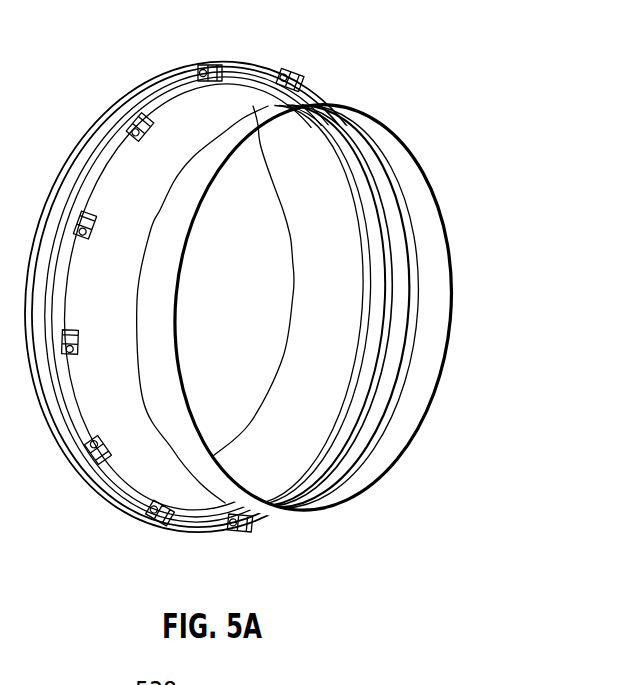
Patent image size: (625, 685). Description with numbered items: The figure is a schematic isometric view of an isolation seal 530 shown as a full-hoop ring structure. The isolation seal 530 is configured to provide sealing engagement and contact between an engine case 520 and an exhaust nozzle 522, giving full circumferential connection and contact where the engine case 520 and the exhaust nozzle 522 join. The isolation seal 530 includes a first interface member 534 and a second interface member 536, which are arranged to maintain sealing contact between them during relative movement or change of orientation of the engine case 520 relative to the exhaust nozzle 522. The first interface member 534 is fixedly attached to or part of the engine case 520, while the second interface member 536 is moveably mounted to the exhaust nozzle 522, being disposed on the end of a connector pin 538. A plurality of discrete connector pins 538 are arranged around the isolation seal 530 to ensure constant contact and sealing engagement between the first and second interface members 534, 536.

The isolation seal 530 is at (322, 62).
The engine case 520 is at (291, 232).
The exhaust nozzle 522 is at (415, 158).
The first interface member 534 is at (362, 312).
The second interface member 536 is at (383, 375).
The connector pin 538 is at (128, 115).